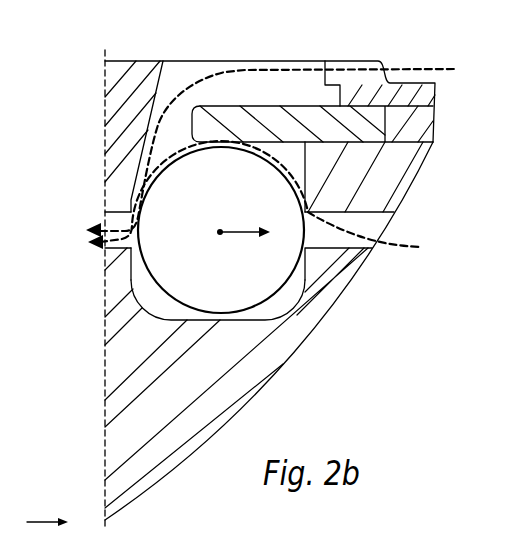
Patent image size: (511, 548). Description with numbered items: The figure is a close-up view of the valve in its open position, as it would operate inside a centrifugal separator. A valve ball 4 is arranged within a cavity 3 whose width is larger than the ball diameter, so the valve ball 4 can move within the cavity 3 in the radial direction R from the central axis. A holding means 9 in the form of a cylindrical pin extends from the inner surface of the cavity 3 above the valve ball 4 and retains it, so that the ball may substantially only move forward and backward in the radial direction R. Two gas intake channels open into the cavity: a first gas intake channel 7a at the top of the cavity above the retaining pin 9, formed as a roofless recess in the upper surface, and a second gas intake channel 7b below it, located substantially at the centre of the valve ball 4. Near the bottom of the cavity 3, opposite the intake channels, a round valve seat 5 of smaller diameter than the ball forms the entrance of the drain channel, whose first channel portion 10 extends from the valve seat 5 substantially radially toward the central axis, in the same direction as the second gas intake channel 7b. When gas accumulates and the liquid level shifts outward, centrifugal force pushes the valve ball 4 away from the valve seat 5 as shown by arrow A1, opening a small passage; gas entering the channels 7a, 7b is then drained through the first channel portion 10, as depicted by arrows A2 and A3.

The cavity 3 is at (288, 70).
The valve ball 4 is at (283, 225).
The valve seat 5 is at (133, 262).
The first gas intake channel 7a is at (390, 80).
The second gas intake channel 7b is at (368, 233).
The holding means 9 is at (238, 120).
The first channel portion 10 is at (123, 250).
The arrow A1 is at (243, 242).
The arrow A2 is at (81, 226).
The arrow A3 is at (83, 249).
The radial direction R is at (47, 511).